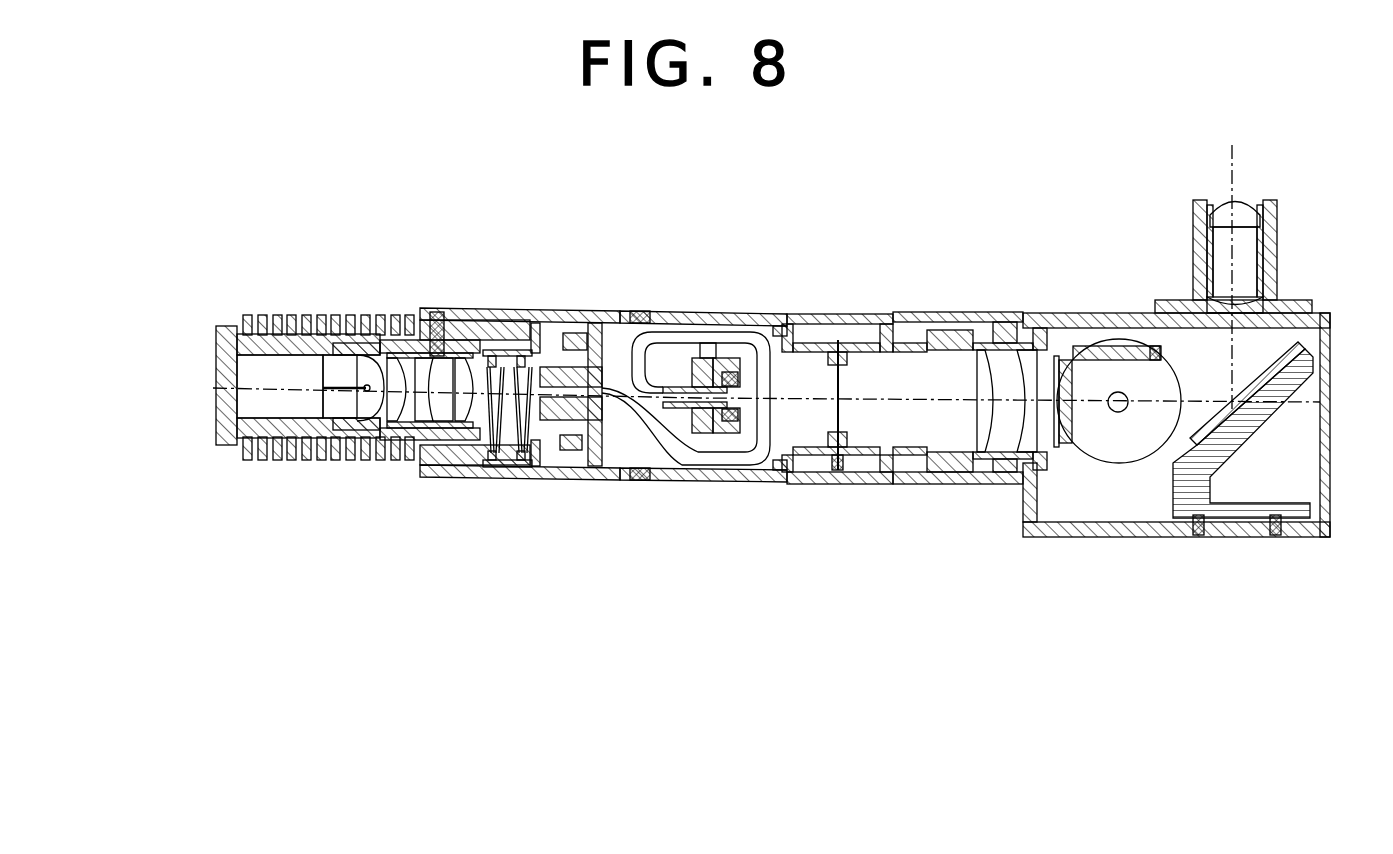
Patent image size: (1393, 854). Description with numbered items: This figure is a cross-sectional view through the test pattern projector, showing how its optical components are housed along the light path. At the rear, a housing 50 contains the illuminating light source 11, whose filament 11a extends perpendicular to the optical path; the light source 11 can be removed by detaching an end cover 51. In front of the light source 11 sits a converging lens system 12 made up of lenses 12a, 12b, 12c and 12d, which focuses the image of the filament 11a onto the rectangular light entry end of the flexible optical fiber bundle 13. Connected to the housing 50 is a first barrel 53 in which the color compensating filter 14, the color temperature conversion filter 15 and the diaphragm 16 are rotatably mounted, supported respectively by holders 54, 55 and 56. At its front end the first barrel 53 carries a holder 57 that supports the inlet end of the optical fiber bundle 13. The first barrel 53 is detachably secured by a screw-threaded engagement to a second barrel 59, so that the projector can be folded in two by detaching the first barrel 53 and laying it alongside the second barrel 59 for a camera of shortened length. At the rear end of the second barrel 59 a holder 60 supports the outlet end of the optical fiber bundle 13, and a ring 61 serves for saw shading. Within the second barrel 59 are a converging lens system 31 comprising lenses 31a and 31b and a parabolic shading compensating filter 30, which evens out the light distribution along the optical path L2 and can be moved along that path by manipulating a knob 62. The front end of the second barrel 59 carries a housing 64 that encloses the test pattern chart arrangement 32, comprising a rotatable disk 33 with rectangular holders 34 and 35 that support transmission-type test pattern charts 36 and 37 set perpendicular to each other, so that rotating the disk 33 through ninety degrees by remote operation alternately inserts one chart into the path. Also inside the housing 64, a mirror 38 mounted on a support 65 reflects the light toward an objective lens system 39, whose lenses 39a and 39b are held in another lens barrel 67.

The illuminating light source 11 is at (337, 452).
The filament 11a is at (362, 368).
The converging lens system 12 is at (429, 458).
The lens 12a is at (388, 417).
The lens 12b is at (418, 417).
The lens 12c is at (445, 417).
The lens 12d is at (487, 444).
The optical fiber bundle 13 is at (743, 458).
The color compensating filter 14 is at (525, 448).
The color temperature conversion filter 15 is at (542, 470).
The diaphragm 16 is at (522, 355).
The parabolic shading compensating filter 30 is at (840, 412).
The converging lens system 31 is at (980, 455).
The lens 31a is at (977, 432).
The lens 31b is at (1027, 432).
The test pattern chart arrangement 32 is at (1158, 460).
The rotatable disk 33 is at (1112, 450).
The rectangular holder 34 is at (1065, 360).
The rectangular holder 35 is at (1161, 350).
The test pattern chart 36 is at (1053, 440).
The test pattern chart 37 is at (1113, 348).
The mirror 38 is at (1213, 427).
The objective lens system 39 is at (1256, 254).
The lens 39a is at (1270, 300).
The lens 39b is at (1272, 221).
The housing 50 is at (362, 350).
The end cover 51 is at (230, 417).
The first barrel 53 is at (572, 470).
The holder 54 is at (497, 352).
The holder 55 is at (510, 350).
The holder 56 is at (580, 440).
The holder 57 is at (550, 350).
The second barrel 59 is at (698, 480).
The holder 60 is at (700, 365).
The ring 61 is at (740, 413).
The knob 62 is at (837, 482).
The housing 64 is at (1105, 520).
The support 65 is at (1267, 408).
The lens barrel 67 is at (1193, 220).
The optical path L2 is at (928, 400).